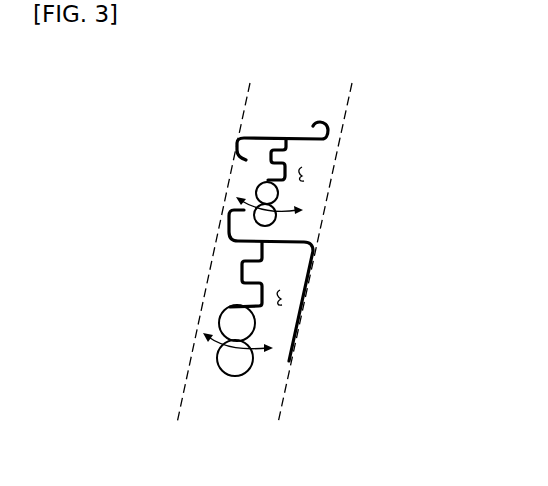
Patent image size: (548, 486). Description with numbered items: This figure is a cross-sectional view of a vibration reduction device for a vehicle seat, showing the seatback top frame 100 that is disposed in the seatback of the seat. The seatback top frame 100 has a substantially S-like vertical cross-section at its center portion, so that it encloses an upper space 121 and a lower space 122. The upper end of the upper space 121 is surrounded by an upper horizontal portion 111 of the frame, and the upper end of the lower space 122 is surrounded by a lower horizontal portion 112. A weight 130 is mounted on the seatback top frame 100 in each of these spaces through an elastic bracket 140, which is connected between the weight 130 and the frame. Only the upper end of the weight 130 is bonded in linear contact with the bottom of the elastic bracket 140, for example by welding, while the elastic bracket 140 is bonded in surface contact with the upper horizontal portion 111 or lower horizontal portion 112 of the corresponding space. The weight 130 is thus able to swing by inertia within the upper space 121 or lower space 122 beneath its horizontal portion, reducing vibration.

The seatback top frame 100 is at (272, 129).
The upper horizontal portion 111 is at (309, 141).
The lower horizontal portion 112 is at (280, 245).
The upper space 121 is at (306, 181).
The lower space 122 is at (283, 300).
The weight 130 is at (232, 210).
The elastic bracket 140 is at (269, 162).